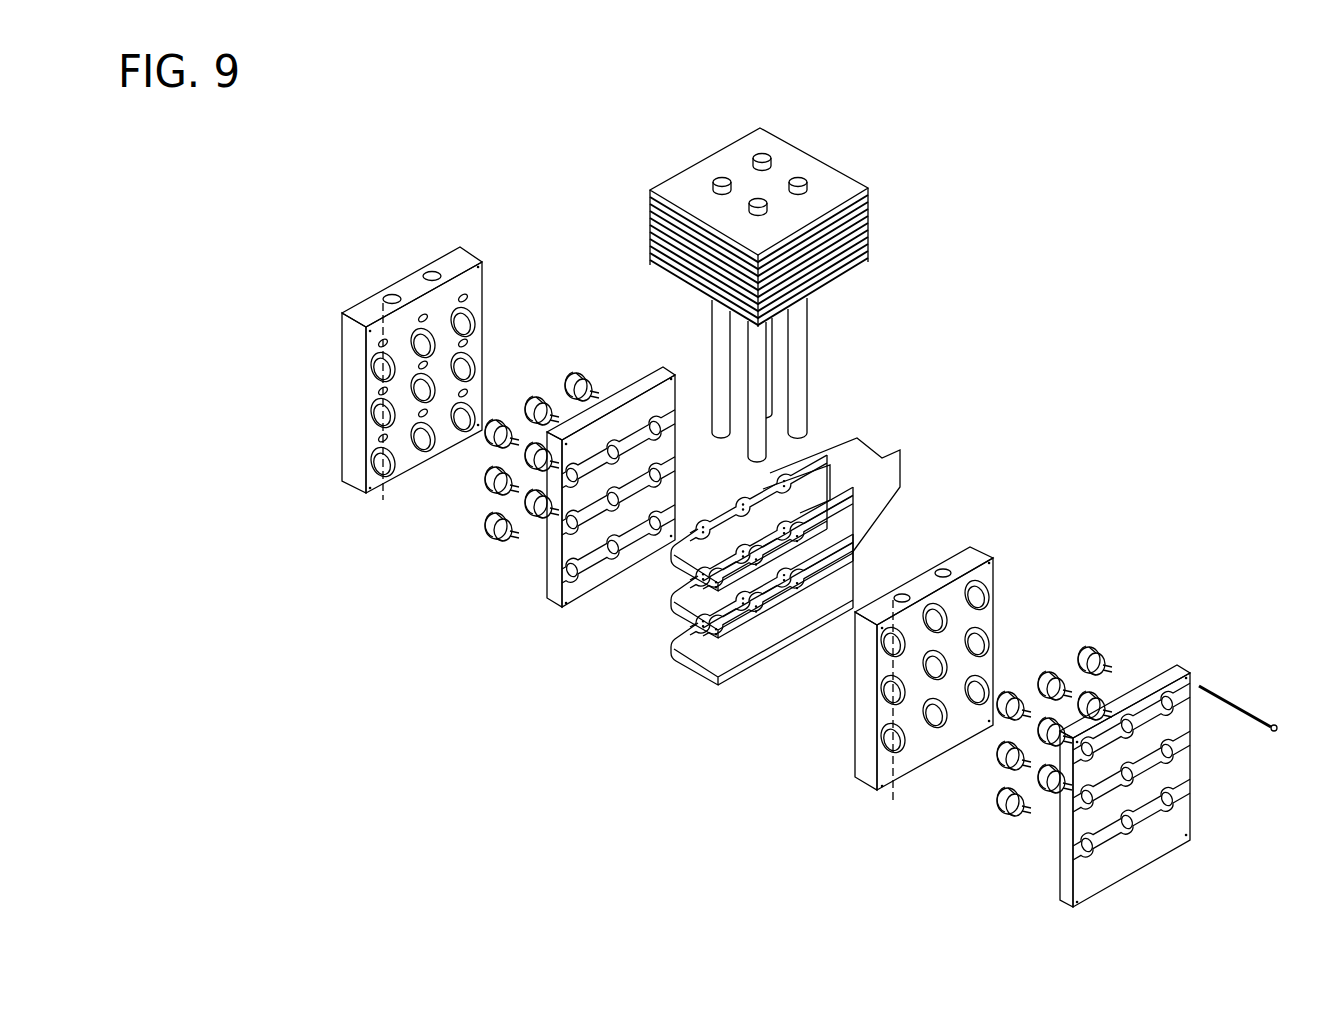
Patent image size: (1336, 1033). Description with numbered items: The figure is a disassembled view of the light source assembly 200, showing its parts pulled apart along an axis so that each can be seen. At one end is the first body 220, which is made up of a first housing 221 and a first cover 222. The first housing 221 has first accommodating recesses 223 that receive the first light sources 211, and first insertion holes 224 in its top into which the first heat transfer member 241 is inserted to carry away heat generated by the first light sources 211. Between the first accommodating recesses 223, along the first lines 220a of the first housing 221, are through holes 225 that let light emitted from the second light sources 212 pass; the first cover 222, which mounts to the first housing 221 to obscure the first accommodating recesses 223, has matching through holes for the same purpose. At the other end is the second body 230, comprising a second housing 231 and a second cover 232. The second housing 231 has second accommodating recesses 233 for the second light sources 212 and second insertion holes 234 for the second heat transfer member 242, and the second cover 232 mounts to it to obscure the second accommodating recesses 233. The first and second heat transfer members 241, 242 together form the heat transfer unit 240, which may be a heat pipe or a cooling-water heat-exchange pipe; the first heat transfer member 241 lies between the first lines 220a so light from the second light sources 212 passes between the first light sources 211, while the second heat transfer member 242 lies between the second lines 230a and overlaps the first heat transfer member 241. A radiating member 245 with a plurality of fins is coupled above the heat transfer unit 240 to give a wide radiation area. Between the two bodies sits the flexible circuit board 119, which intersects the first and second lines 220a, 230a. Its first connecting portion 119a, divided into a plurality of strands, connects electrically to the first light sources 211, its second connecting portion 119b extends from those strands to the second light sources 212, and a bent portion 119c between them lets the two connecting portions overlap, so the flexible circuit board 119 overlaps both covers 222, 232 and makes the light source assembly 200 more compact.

The light source assembly 200 is at (1118, 399).
The first body 220 is at (473, 643).
The first lines 220a is at (391, 497).
The first housing 221 is at (384, 500).
The first cover 222 is at (550, 557).
The first accommodating recesses 223 is at (468, 320).
The first insertion holes 224 is at (432, 270).
The through holes 225 is at (468, 297).
The first light sources 211 is at (580, 378).
The second light sources 212 is at (1100, 653).
The heat transfer unit 240 is at (993, 243).
The radiating member 245 is at (846, 188).
The first heat transfer member 241 is at (722, 345).
The second heat transfer member 242 is at (798, 375).
The flexible circuit board 119 is at (873, 450).
The first connecting portion 119a is at (745, 490).
The second connecting portion 119b is at (772, 650).
The bent portion 119c is at (697, 663).
The second body 230 is at (778, 823).
The second lines 230a is at (898, 795).
The second housing 231 is at (880, 768).
The second cover 232 is at (1062, 887).
The second accommodating recesses 233 is at (985, 591).
The second insertion holes 234 is at (943, 568).